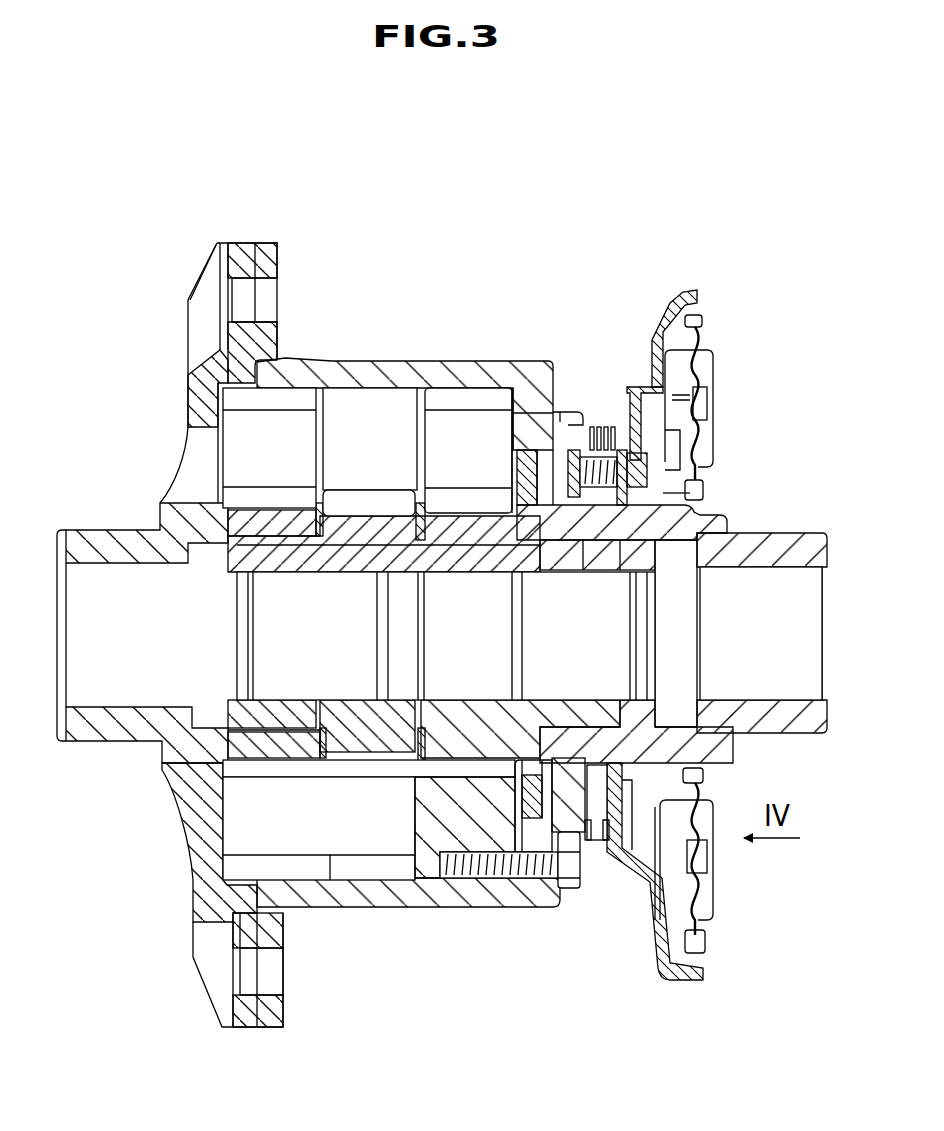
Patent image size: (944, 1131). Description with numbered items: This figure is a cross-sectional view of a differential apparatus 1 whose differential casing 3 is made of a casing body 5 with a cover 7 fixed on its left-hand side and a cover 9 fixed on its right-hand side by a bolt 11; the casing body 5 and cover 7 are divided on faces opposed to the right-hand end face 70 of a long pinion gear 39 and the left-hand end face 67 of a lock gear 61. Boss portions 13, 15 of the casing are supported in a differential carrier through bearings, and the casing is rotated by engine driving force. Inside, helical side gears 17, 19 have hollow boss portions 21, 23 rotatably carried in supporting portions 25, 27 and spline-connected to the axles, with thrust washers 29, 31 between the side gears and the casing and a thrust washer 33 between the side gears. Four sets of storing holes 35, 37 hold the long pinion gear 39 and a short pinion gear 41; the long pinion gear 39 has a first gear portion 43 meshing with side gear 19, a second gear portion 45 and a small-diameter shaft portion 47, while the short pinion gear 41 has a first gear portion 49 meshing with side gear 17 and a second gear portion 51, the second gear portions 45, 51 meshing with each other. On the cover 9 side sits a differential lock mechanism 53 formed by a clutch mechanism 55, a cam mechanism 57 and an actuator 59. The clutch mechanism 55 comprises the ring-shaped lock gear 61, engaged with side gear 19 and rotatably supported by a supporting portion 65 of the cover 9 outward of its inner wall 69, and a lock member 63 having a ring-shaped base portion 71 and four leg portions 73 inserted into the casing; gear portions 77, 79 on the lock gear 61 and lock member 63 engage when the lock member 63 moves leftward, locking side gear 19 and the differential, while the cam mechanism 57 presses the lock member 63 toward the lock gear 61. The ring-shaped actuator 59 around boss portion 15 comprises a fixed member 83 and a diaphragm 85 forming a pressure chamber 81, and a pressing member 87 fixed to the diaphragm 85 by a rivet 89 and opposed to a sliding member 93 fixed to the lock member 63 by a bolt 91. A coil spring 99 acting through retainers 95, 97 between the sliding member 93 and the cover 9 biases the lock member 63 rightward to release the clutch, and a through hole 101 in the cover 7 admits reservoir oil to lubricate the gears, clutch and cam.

The differential apparatus 1 is at (340, 226).
The differential casing 3 is at (257, 240).
The casing body 5 is at (388, 362).
The cover 7 is at (211, 378).
The cover 9 is at (550, 360).
The bolt 11 is at (570, 889).
The boss portion 13 is at (97, 528).
The boss portion 15 is at (793, 530).
The side gear 17 is at (355, 516).
The side gear 19 is at (472, 757).
The boss portion 21 is at (288, 562).
The boss portion 23 is at (640, 545).
The supporting portion 25 is at (267, 723).
The supporting portion 27 is at (610, 723).
The thrust washer 29 is at (323, 727).
The thrust washer 31 is at (545, 735).
The thrust washer 33 is at (428, 720).
The storing hole 35 is at (343, 393).
The storing hole 37 is at (327, 870).
The long pinion gear 39 is at (192, 306).
The short pinion gear 41 is at (216, 890).
The first gear portion 43 is at (440, 398).
The second gear portion 45 is at (287, 400).
The shaft portion 47 is at (383, 465).
The first gear portion 49 is at (357, 863).
The second gear portion 51 is at (272, 863).
The differential lock mechanism 53 is at (638, 278).
The clutch mechanism 55 is at (589, 336).
The cam mechanism 57 is at (575, 520).
The actuator 59 is at (754, 408).
The lock gear 61 is at (495, 520).
The lock member 63 is at (623, 520).
The supporting portion 65 is at (533, 412).
The left-hand end face 67 is at (512, 478).
The inner wall 69 is at (548, 400).
The right-hand end face 70 is at (515, 385).
The base portion 71 is at (597, 765).
The leg portions 73 is at (612, 509).
The gear portion 77 is at (527, 527).
The gear portion 79 is at (567, 505).
The pressure chamber 81 is at (703, 445).
The fixed member 83 is at (713, 350).
The diaphragm 85 is at (688, 363).
The pressing member 87 is at (690, 395).
The rivet 89 is at (703, 402).
The bolt 91 is at (662, 493).
The sliding member 93 is at (656, 310).
The retainer 95 is at (585, 843).
The retainer 97 is at (615, 840).
The coil spring 99 is at (607, 840).
The through hole 101 is at (207, 425).